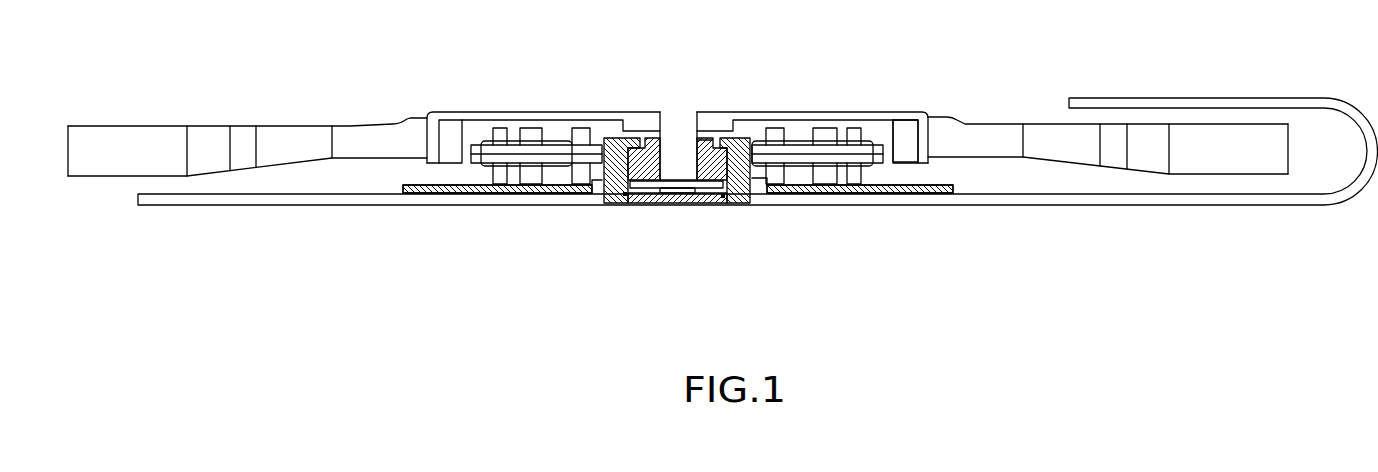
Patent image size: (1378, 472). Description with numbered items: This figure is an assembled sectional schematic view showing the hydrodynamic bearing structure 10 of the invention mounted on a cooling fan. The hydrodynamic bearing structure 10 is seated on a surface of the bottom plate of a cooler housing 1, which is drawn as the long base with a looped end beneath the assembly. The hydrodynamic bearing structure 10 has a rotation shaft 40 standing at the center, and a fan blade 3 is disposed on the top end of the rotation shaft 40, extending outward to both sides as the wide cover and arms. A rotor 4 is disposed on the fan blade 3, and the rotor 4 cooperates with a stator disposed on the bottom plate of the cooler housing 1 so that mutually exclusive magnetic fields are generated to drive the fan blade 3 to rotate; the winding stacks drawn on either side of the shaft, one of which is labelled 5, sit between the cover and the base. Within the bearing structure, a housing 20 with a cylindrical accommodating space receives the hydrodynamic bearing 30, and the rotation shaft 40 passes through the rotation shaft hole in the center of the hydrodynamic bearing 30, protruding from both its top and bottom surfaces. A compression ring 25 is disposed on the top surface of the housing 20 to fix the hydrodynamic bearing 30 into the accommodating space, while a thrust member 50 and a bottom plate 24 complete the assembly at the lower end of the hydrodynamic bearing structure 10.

The cooler housing 1 is at (1211, 98).
The fan blade 3 is at (788, 112).
The rotor 4 is at (905, 135).
The elastic member 5 is at (557, 160).
The hydrodynamic bearing structure 10 is at (668, 216).
The housing 20 is at (737, 205).
The bottom plate 24 is at (707, 205).
The compression ring 25 is at (736, 150).
The hydrodynamic bearing 30 is at (706, 142).
The rotation shaft 40 is at (678, 125).
The thrust member 50 is at (643, 202).